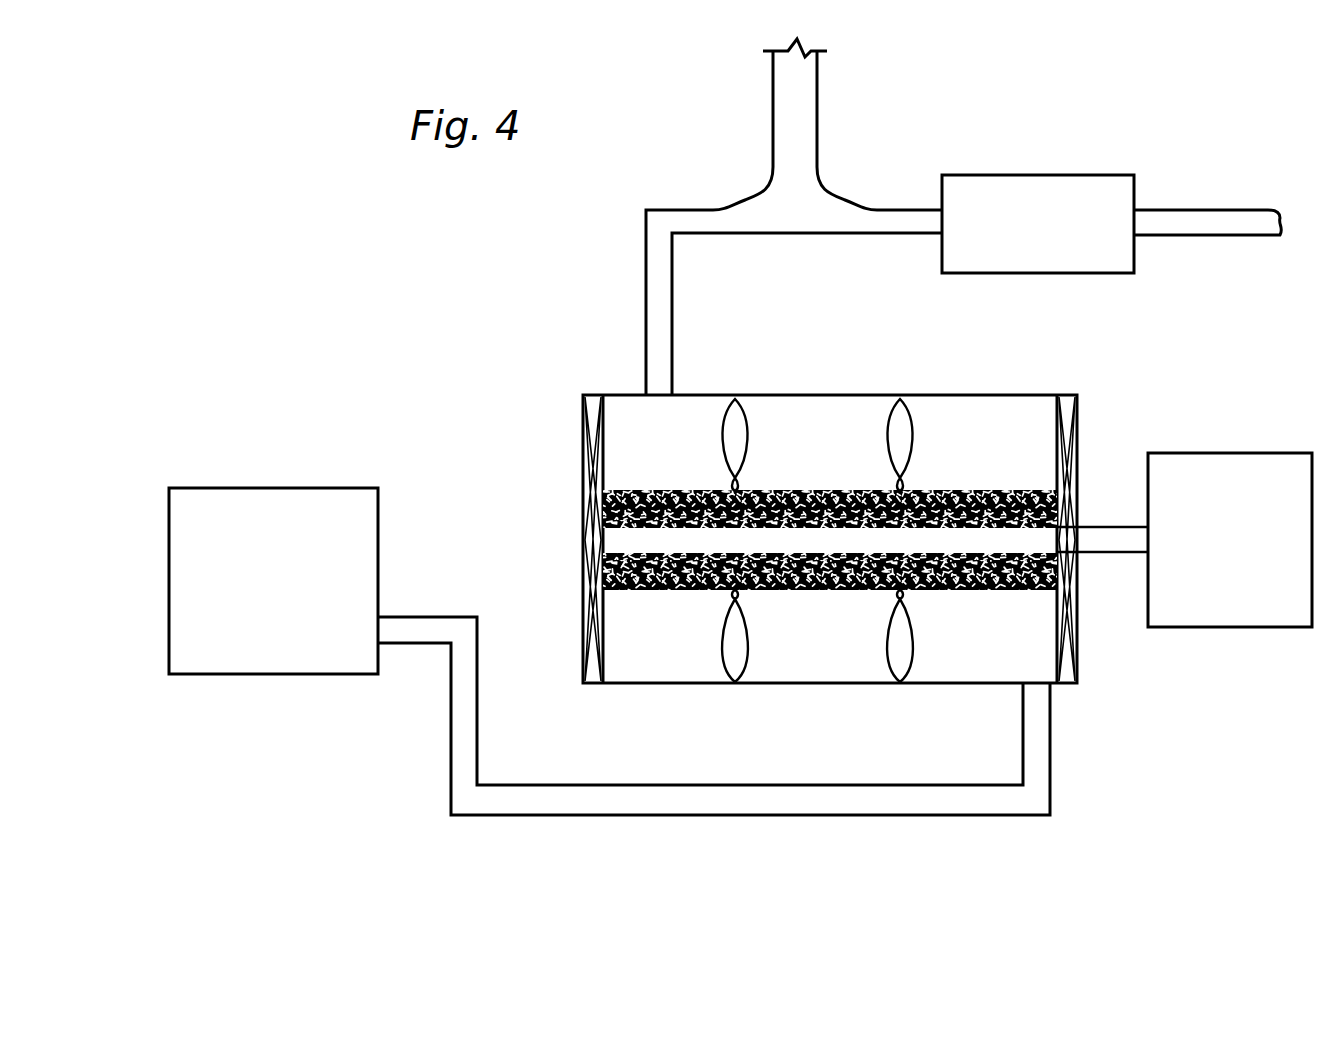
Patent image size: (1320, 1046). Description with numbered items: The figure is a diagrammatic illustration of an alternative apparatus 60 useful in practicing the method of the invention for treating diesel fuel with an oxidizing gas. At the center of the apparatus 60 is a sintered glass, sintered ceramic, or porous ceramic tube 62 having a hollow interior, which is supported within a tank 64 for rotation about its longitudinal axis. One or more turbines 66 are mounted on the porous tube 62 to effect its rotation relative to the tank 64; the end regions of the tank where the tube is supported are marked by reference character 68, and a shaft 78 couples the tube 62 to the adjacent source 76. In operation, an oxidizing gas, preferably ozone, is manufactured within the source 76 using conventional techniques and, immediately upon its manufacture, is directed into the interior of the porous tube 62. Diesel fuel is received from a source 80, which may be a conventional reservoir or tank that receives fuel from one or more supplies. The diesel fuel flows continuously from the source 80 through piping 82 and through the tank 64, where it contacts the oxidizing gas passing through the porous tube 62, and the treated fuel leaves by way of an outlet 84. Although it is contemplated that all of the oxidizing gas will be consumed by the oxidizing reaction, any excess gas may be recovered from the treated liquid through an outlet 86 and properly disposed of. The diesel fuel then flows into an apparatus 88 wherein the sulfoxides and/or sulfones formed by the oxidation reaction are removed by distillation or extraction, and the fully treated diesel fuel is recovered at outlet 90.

The apparatus 60 is at (418, 278).
The sintered or porous tube 62 is at (810, 468).
The tank 64 is at (828, 372).
The turbines 66 is at (700, 392).
The heat exchanger 68 is at (597, 372).
The source of oxidizing gas 76 is at (1215, 648).
The drive shaft 78 is at (1119, 502).
The source of diesel fuel 80 is at (297, 462).
The piping 82 is at (700, 832).
The outlet 84 is at (620, 278).
The outlet for excess oxidizing gas 86 is at (745, 184).
The apparatus for removing sulfoxides and/or sulfones 88 is at (1052, 175).
The outlet 90 is at (1181, 237).